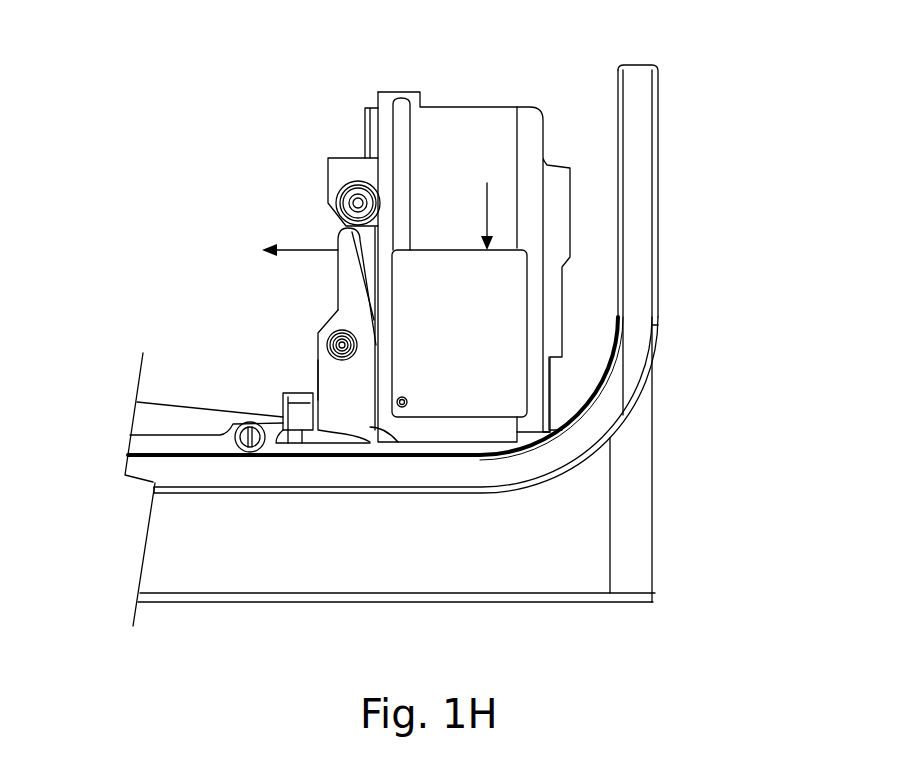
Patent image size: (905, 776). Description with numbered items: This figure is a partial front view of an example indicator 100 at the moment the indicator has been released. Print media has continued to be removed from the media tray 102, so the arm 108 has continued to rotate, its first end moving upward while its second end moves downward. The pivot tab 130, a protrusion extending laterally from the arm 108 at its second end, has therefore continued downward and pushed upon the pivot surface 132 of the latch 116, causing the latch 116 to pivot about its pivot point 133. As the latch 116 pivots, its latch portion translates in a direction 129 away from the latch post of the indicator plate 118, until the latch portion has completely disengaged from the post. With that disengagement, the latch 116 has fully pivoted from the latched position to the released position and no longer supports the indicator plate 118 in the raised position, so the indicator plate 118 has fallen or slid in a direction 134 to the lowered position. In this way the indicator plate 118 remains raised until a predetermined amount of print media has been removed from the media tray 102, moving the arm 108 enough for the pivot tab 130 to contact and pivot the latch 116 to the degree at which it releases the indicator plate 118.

The indicator 100 is at (192, 172).
The media tray 102 is at (690, 172).
The arm 108 is at (155, 425).
The latch 116 is at (370, 445).
The indicator plate 118 is at (476, 321).
The direction 129 is at (296, 252).
The pivot tab 130 is at (283, 395).
The pivot surface 132 is at (305, 377).
The pivot point 133 is at (327, 342).
The direction 134 is at (487, 185).